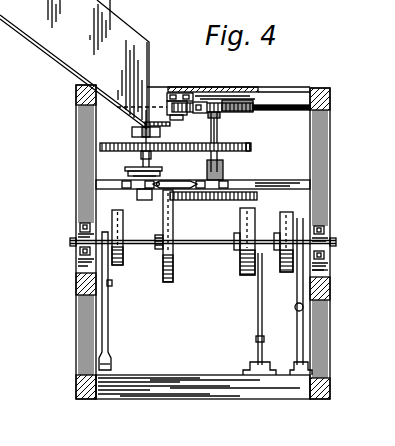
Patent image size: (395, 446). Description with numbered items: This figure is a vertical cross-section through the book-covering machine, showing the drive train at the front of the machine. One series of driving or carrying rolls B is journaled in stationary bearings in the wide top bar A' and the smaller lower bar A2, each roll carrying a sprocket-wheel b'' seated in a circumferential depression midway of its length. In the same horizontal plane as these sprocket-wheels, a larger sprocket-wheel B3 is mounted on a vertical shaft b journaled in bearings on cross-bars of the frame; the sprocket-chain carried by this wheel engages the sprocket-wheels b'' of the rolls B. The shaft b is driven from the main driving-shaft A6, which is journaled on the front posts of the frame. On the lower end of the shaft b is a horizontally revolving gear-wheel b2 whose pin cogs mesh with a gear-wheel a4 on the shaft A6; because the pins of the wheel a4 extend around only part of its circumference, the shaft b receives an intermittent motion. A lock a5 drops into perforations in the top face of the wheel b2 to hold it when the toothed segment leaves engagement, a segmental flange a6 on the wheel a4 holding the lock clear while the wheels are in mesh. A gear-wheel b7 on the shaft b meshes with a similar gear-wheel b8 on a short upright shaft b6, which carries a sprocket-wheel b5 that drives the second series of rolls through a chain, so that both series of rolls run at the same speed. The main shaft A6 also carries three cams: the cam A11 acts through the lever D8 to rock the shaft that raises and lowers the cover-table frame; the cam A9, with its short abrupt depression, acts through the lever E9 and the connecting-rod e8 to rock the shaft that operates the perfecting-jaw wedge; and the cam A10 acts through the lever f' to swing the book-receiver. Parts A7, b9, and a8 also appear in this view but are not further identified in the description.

The inclined plate A7 is at (60, 44).
The top bar A' is at (239, 78).
The driving or carrying rolls B is at (187, 93).
The sprocket-wheel b'' is at (212, 88).
The sprocket-wheel B3 is at (257, 108).
The lower bar A2 is at (208, 126).
The vertical shaft b is at (223, 152).
The sprocket-wheel b5 is at (132, 131).
The gear-wheel b8 is at (100, 147).
The gear-wheel b7 is at (252, 147).
The upright shaft b6 is at (152, 165).
The bearing plates b9 is at (125, 170).
The lock a5 is at (175, 177).
The gear-wheel b2 is at (225, 200).
The cam A10 is at (124, 222).
The segmental flange a6 is at (155, 238).
The gear-wheel a4 is at (173, 236).
The cam A11 is at (280, 220).
The main driving-shaft A6 is at (237, 245).
The cam A9 is at (244, 268).
The lever D8 is at (330, 270).
The lever f' is at (113, 301).
The lever E9 is at (257, 318).
The connecting-rod e8 is at (256, 340).
The rod pivot a8 is at (295, 307).